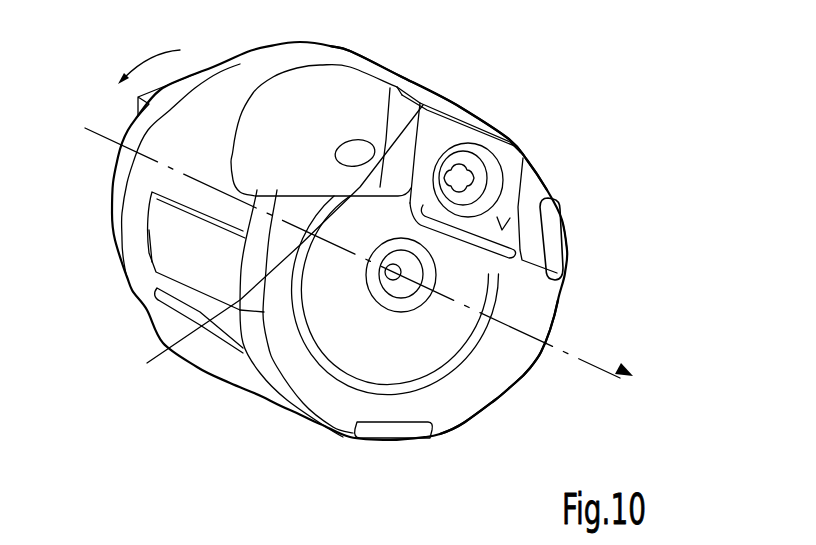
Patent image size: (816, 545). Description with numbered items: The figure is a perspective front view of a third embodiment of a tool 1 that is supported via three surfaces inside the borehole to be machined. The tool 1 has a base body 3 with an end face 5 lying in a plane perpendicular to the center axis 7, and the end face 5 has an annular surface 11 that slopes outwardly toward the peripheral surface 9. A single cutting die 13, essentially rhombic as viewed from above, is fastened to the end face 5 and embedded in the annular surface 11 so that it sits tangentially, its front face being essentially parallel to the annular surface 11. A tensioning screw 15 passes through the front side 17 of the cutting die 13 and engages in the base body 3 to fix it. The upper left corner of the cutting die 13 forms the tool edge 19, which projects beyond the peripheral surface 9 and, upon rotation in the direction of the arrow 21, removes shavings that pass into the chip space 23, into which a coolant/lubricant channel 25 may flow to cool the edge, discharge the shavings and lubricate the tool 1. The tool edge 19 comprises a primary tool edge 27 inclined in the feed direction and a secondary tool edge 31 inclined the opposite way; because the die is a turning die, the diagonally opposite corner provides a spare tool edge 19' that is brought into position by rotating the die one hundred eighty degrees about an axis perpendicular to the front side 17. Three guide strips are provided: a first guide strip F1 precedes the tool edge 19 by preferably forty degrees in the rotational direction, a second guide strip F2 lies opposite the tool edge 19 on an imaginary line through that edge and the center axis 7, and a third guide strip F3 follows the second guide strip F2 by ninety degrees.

The tool 1 is at (574, 153).
The base body 3 is at (210, 147).
The end face 5 is at (378, 357).
The center axis 7 is at (568, 356).
The peripheral surface 9 is at (390, 71).
The annular surface 11 is at (306, 369).
The cutting die 13 is at (507, 121).
The tensioning screw 15 is at (500, 156).
The front side 17 is at (550, 198).
The tool edge 19 is at (477, 152).
The tool edge 19' is at (538, 241).
The arrow 21 is at (140, 67).
The chip space 23 is at (290, 156).
The coolant/lubricant channel 25 is at (357, 150).
The primary tool edge 27 is at (662, 345).
The secondary tool edge 31 is at (300, 256).
The first guide strip F1 is at (566, 224).
The second guide strip F2 is at (423, 440).
The third guide strip F3 is at (165, 223).